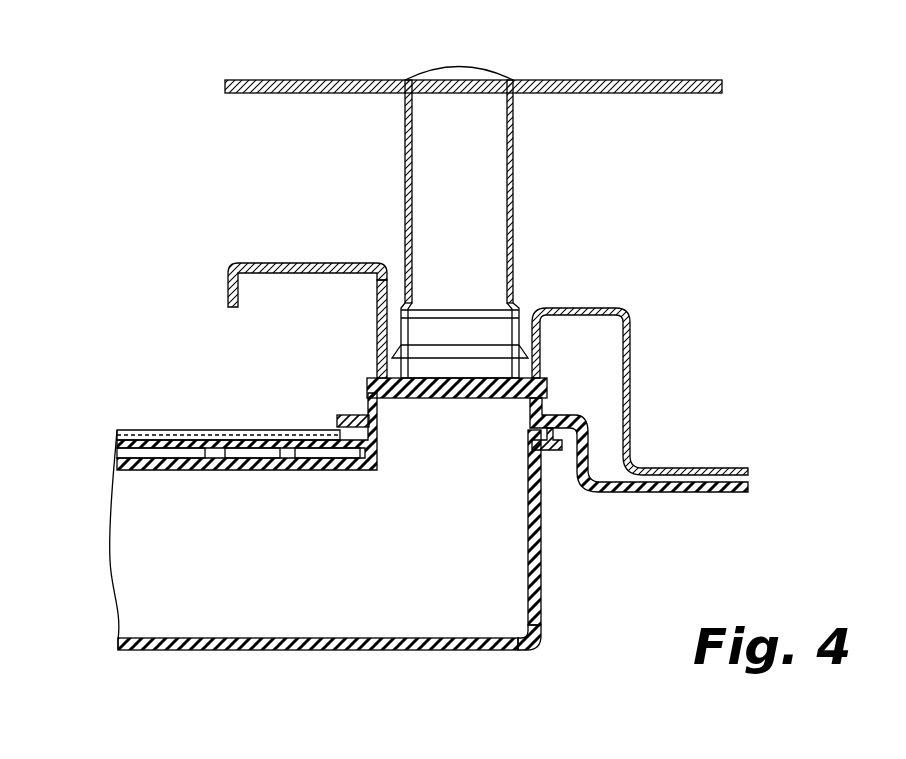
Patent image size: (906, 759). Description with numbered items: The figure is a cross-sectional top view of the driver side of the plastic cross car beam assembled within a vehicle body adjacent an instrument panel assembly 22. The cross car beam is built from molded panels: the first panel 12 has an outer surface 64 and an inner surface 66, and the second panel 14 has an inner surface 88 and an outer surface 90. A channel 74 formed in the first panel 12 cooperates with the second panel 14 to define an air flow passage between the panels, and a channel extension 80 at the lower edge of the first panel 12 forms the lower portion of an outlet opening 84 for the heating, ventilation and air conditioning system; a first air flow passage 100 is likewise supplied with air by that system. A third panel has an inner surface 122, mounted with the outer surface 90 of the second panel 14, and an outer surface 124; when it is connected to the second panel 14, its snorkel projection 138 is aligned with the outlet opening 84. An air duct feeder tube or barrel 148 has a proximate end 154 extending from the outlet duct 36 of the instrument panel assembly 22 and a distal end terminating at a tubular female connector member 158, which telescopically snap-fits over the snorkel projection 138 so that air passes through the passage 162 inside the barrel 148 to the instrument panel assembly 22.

The first panel 12 is at (201, 650).
The second panel 14 is at (387, 558).
The instrument panel assembly 22 is at (652, 80).
The outlet duct 36 is at (470, 67).
The outer surface 64 is at (527, 578).
The inner surface 66 is at (540, 600).
The channel 74 is at (110, 535).
The channel extension 80 is at (531, 452).
The outlet opening 84 is at (386, 389).
The inner surface 88 is at (607, 494).
The outer surface 90 is at (355, 416).
The first air flow passage 100 is at (300, 565).
The inner surface 122 is at (282, 274).
The outer surface 124 is at (592, 308).
The snorkel projection 138 is at (504, 332).
The air duct feeder tube or barrel 148 is at (266, 259).
The proximate end 154 is at (514, 108).
The tubular female connector member 158 is at (379, 318).
The passage 162 is at (507, 191).